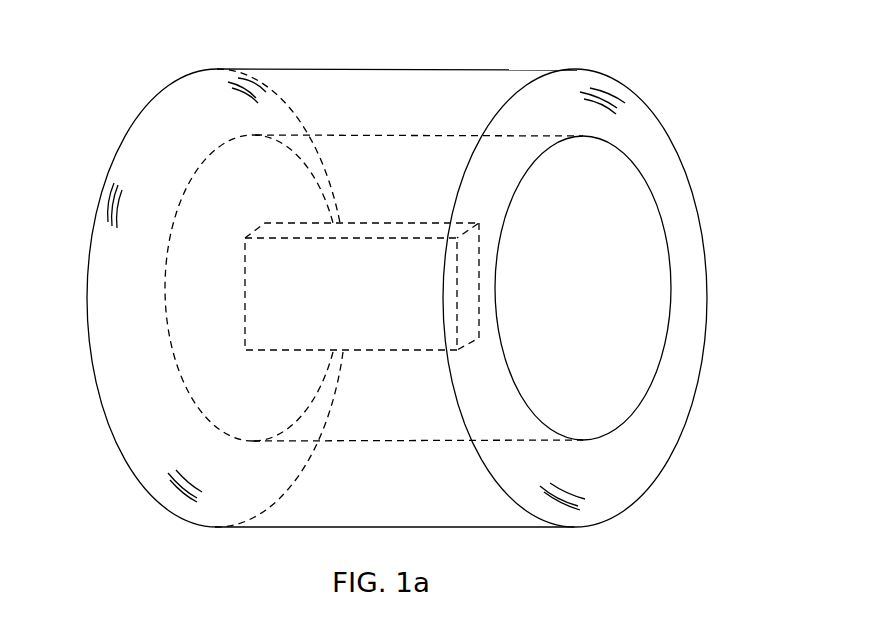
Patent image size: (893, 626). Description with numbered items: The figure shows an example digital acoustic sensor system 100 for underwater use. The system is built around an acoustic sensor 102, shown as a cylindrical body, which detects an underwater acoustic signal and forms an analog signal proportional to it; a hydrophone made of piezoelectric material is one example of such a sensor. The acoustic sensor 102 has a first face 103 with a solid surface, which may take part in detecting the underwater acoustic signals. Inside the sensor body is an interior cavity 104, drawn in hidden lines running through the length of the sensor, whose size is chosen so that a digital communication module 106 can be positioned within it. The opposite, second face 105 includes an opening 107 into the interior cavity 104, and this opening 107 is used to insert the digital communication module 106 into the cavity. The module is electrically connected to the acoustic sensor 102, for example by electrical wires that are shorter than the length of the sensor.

The digital acoustic sensor system 100 is at (406, 272).
The acoustic sensor 102 is at (108, 173).
The first face 103 is at (80, 281).
The interior cavity 104 is at (387, 134).
The second face 105 is at (641, 467).
The digital communication module 106 is at (370, 223).
The opening 107 is at (596, 302).